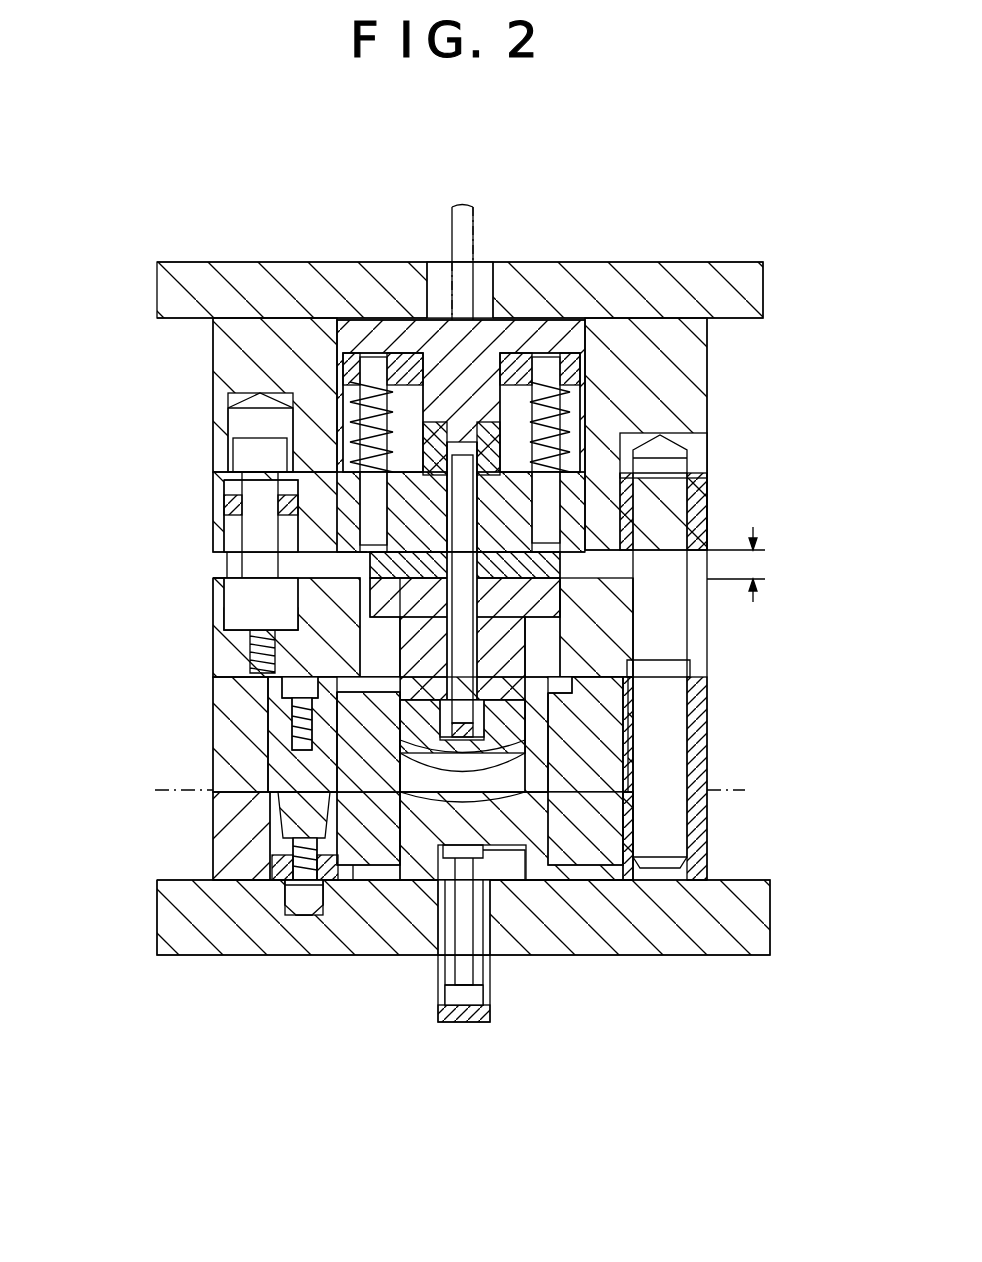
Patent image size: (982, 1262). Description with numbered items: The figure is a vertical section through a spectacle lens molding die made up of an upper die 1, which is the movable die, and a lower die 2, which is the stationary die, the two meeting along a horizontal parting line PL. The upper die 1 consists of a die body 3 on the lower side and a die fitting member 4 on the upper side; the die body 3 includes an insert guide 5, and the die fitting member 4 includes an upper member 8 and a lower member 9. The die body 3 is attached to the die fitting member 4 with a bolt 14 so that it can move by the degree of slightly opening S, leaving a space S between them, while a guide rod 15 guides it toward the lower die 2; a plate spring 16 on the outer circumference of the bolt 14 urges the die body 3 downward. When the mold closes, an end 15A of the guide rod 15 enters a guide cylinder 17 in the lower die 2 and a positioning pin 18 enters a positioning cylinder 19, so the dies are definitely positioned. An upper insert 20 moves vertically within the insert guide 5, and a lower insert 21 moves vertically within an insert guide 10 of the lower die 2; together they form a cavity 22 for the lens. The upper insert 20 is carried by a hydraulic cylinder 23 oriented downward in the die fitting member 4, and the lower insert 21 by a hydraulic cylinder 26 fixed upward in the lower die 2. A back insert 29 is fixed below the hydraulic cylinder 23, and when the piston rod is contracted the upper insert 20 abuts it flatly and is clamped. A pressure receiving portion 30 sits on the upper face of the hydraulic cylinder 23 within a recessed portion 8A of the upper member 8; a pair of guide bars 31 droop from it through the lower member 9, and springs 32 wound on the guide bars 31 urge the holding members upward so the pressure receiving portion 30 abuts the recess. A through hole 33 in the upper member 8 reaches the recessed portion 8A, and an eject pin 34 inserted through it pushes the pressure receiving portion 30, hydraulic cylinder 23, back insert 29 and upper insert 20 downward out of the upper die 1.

The upper die 1 is at (198, 636).
The lower die 2 is at (189, 840).
The die body 3 is at (218, 662).
The die fitting member 4 is at (216, 356).
The insert guide 5 is at (545, 760).
The upper member 8 is at (162, 300).
The recessed portion 8A is at (270, 425).
The lower member 9 is at (219, 598).
The insert guide 10 is at (592, 850).
The bolt 14 is at (262, 530).
The guide rod 15 is at (670, 523).
The end of the guide rod 15A is at (663, 828).
The plate spring 16 is at (233, 500).
The guide cylinder 17 is at (700, 845).
The positioning pin 18 is at (276, 738).
The positioning cylinder 19 is at (265, 823).
The upper insert 20 is at (513, 712).
The lower insert 21 is at (505, 870).
The cavity 22 is at (440, 770).
The hydraulic cylinder 23 is at (522, 445).
The hydraulic cylinder 26 is at (462, 1024).
The back insert 29 is at (520, 651).
The pressure receiving portion 30 is at (385, 320).
The guide bars 31 is at (372, 480).
The springs 32 is at (350, 455).
The through hole 33 is at (478, 262).
The eject pin 34 is at (452, 212).
The parting line PL is at (431, 791).
The degree of slightly opening S is at (744, 564).